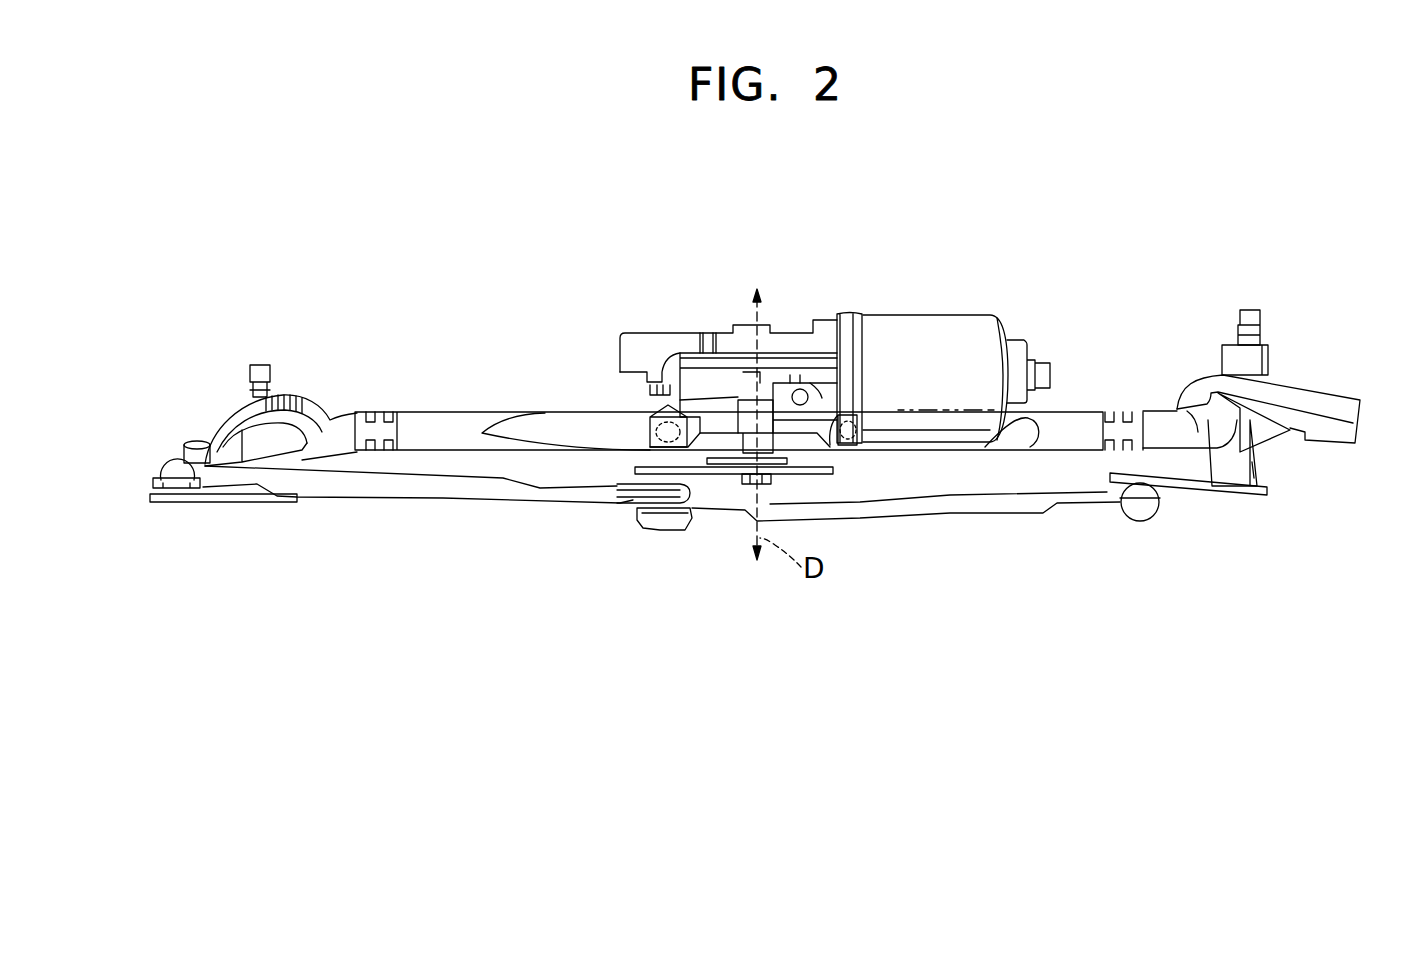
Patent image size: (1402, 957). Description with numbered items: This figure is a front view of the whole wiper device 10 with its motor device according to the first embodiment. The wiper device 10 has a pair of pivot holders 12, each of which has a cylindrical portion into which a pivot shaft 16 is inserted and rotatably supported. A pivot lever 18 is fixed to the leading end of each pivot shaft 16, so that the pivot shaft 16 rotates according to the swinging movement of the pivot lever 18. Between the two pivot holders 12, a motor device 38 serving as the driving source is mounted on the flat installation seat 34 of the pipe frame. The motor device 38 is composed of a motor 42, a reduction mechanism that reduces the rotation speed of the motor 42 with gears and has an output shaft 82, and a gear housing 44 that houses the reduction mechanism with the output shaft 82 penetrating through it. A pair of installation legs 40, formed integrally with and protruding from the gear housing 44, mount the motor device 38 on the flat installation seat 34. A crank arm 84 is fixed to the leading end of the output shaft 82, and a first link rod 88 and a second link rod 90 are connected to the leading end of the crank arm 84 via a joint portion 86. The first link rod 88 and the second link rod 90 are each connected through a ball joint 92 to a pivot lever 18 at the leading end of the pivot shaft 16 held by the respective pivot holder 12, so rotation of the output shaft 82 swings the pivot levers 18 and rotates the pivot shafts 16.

The wiper device 10 is at (759, 262).
The pivot holder 12 is at (302, 400).
The pivot shaft 16 is at (271, 371).
The pivot lever 18 is at (247, 504).
The flat installation seat 34 is at (600, 444).
The motor device 38 is at (835, 336).
The installation leg 40 is at (650, 420).
The motor 42 is at (879, 315).
The gear housing 44 is at (808, 327).
The output shaft 82 is at (773, 478).
The crank arm 84 is at (705, 480).
The joint portion 86 is at (660, 533).
The first link rod 88 is at (450, 503).
The second link rod 90 is at (930, 508).
The ball joint 92 is at (165, 500).